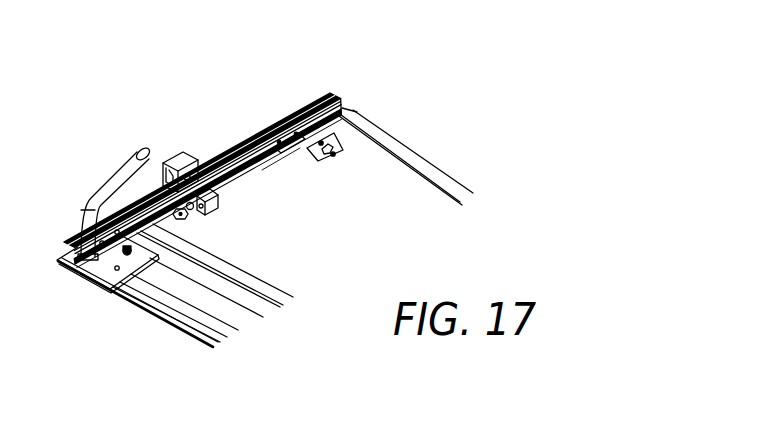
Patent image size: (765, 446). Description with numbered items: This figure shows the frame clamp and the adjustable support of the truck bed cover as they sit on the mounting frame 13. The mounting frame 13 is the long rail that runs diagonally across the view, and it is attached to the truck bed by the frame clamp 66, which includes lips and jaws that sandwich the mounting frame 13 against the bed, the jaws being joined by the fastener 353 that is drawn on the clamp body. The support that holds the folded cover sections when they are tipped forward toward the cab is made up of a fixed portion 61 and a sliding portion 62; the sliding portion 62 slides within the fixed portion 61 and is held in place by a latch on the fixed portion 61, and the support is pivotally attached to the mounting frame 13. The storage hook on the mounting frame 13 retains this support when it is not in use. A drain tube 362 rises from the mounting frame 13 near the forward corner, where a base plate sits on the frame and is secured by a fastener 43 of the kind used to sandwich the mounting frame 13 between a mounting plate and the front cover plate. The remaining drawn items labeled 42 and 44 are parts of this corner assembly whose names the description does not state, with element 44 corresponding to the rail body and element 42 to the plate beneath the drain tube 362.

The mounting frame 13 is at (342, 106).
The base plate 42 is at (113, 256).
The fastener 43 is at (127, 254).
The guide rail 44 is at (258, 140).
The fixed portion 61 is at (291, 155).
The sliding portion 62 is at (182, 216).
The frame clamp 66 is at (323, 137).
The fastener 353 is at (218, 200).
The drain tube 362 is at (137, 158).